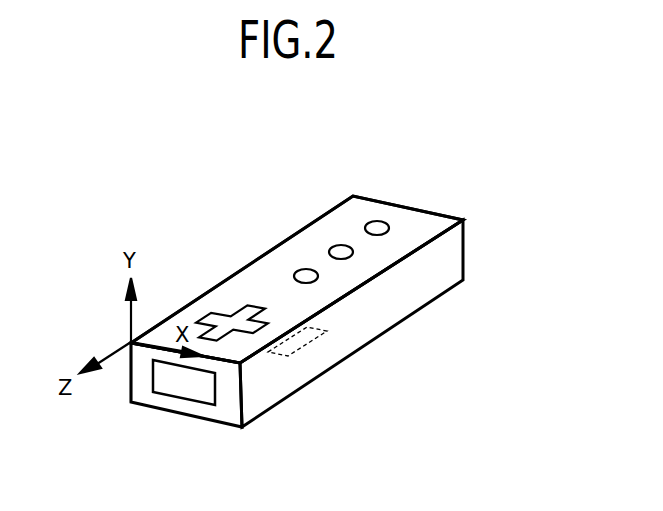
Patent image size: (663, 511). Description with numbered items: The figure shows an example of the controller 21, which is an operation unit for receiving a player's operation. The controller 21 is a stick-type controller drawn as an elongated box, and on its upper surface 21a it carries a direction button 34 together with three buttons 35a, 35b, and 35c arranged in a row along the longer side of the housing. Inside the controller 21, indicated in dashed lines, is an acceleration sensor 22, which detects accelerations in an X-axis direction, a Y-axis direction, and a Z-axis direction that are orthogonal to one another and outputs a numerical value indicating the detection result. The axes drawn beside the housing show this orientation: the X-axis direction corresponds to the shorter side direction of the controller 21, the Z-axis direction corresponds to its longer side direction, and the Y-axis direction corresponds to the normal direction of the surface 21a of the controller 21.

The controller 21 is at (464, 388).
The surface of the controller 21a is at (263, 283).
The acceleration sensor 22 is at (310, 345).
The direction button 34 is at (205, 314).
The button 35a is at (304, 268).
The button 35b is at (340, 245).
The button 35c is at (373, 221).